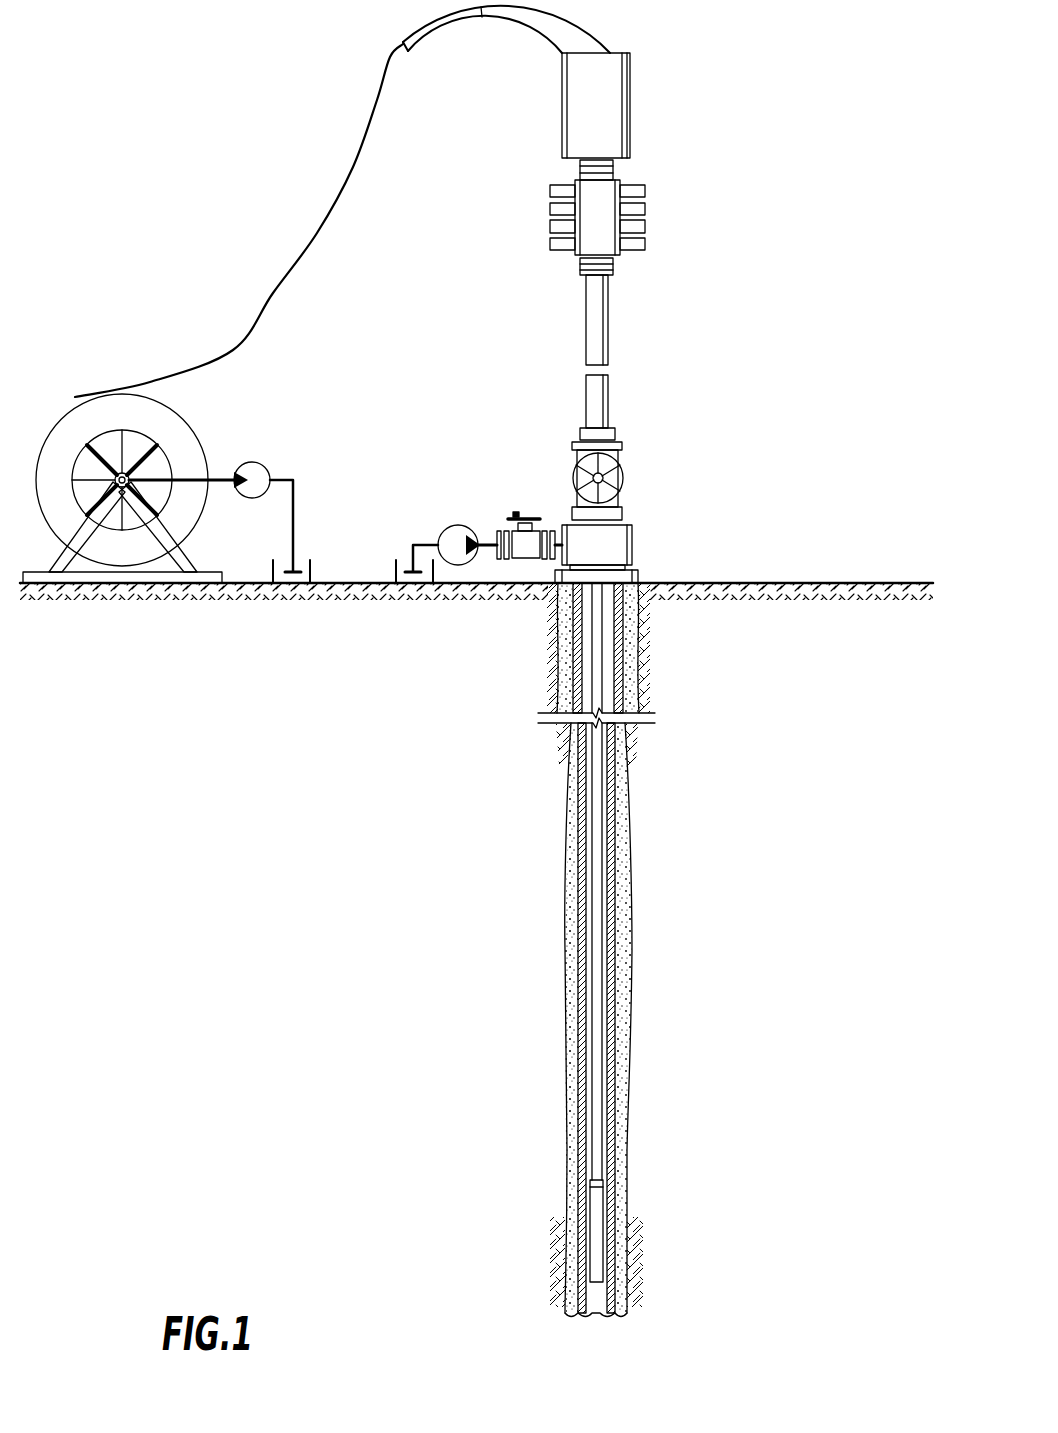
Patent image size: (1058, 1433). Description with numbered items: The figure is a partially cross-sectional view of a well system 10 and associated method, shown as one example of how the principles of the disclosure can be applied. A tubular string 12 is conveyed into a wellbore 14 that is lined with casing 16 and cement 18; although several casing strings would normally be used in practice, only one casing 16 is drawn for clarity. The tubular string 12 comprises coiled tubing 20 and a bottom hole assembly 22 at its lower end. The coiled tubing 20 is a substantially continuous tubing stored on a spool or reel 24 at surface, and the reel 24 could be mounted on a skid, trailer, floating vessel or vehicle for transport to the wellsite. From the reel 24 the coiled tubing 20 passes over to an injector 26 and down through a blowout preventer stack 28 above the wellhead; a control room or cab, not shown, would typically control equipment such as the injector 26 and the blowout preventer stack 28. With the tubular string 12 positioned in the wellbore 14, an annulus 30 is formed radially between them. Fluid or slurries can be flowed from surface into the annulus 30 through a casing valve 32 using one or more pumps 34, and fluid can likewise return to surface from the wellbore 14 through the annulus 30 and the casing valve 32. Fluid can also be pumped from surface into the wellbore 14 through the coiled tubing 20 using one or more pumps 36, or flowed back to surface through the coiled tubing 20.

The system 10 is at (772, 470).
The tubular string 12 is at (607, 683).
The wellbore 14 is at (560, 650).
The casing 16 is at (580, 870).
The cement 18 is at (628, 870).
The coiled tubing 20 is at (275, 293).
The bottom hole assembly 22 is at (597, 1290).
The reel 24 is at (190, 419).
The injector 26 is at (562, 97).
The blowout preventer stack 28 is at (550, 225).
The annulus 30 is at (607, 630).
The casing valve 32 is at (537, 517).
The pump 34 is at (455, 525).
The pump 36 is at (265, 465).